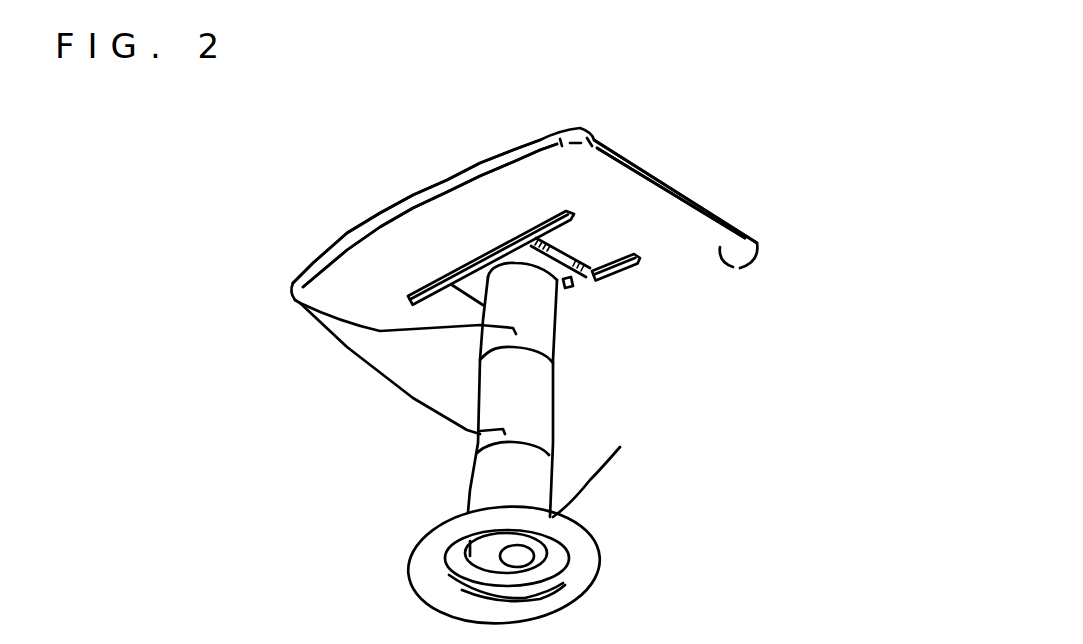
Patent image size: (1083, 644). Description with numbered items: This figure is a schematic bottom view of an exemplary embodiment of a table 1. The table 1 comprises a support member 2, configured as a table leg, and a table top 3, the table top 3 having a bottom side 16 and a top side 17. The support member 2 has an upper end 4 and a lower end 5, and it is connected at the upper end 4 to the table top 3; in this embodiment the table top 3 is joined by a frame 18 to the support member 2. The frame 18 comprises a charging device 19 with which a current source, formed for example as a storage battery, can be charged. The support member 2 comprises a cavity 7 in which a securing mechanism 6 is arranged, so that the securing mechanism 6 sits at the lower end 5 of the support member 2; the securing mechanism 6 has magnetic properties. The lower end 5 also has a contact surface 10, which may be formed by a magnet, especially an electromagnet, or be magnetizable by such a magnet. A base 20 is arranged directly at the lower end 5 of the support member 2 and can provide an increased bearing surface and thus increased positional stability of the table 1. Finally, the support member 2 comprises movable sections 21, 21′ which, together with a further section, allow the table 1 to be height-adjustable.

The table 1 is at (763, 127).
The support member 2 is at (540, 408).
The table top 3 is at (557, 377).
The upper end 4 is at (557, 291).
The lower end 5 is at (395, 537).
The securing mechanism 6 is at (527, 544).
The cavity 7 is at (480, 547).
The contact surface 10 is at (580, 570).
The bottom side 16 is at (652, 213).
The top side 17 is at (398, 192).
The frame 18 is at (533, 253).
The charging device 19 is at (557, 283).
The base 20 is at (592, 545).
The section 21 is at (620, 447).
The section 21′ is at (480, 434).